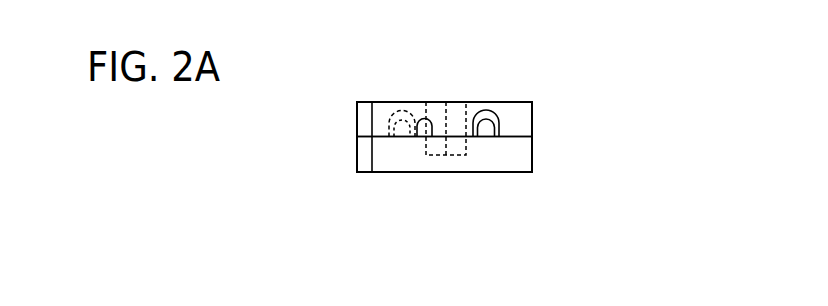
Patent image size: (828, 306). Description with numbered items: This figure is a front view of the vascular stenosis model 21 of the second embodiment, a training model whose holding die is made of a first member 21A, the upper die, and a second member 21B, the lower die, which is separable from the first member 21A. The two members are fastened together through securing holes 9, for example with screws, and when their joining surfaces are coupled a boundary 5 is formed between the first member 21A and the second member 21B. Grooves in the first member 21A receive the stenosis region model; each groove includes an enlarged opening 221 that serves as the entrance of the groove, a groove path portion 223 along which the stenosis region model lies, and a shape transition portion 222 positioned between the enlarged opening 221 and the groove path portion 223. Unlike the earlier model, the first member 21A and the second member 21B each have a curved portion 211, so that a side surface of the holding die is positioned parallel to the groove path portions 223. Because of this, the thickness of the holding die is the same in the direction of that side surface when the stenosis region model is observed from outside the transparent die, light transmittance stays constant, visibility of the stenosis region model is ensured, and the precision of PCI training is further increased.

The vascular stenosis model 21 is at (538, 52).
The first member 21A is at (517, 126).
The second member 21B is at (500, 162).
The curved portion 211 is at (368, 112).
The enlarged opening 221 is at (408, 109).
The shape transition portion 222 is at (394, 121).
The groove path portion 223 is at (405, 137).
The boundary 5 is at (500, 129).
The securing holes 9 is at (430, 111).